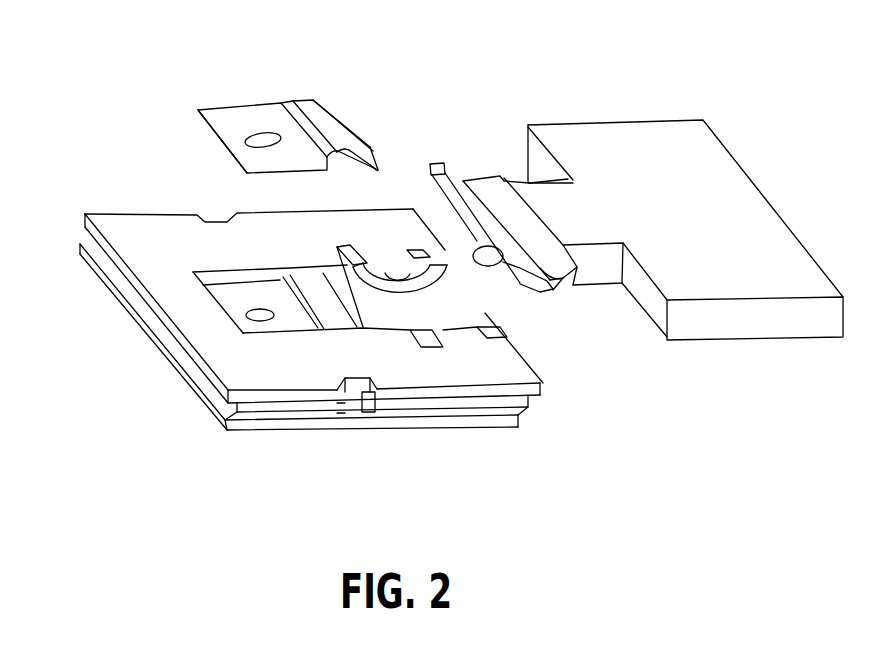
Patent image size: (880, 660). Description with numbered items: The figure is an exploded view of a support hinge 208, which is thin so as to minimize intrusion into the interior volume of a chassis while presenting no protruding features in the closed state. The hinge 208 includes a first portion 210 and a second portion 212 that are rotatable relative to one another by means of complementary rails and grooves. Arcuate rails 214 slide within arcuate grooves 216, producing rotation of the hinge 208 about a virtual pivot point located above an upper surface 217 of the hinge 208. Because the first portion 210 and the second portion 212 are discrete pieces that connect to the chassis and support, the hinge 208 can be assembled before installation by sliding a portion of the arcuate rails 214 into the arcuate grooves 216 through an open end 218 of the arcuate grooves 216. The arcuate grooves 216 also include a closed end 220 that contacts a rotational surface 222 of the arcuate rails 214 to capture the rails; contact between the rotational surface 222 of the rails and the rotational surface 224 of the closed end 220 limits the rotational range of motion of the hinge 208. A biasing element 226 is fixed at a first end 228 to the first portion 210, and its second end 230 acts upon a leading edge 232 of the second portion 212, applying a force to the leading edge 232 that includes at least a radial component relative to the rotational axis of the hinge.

The support hinge 208 is at (738, 124).
The first portion 210 is at (208, 435).
The second portion 212 is at (742, 190).
The arcuate rails 214 is at (572, 275).
The arcuate grooves 216 is at (352, 262).
The upper surface 217 is at (400, 370).
The open end 218 is at (420, 335).
The closed end 220 is at (478, 317).
The rotational surface 222 is at (547, 287).
The rotational surface 224 is at (400, 278).
The biasing element 226 is at (255, 115).
The first end 228 is at (223, 140).
The second end 230 is at (365, 131).
The leading edge 232 is at (427, 193).